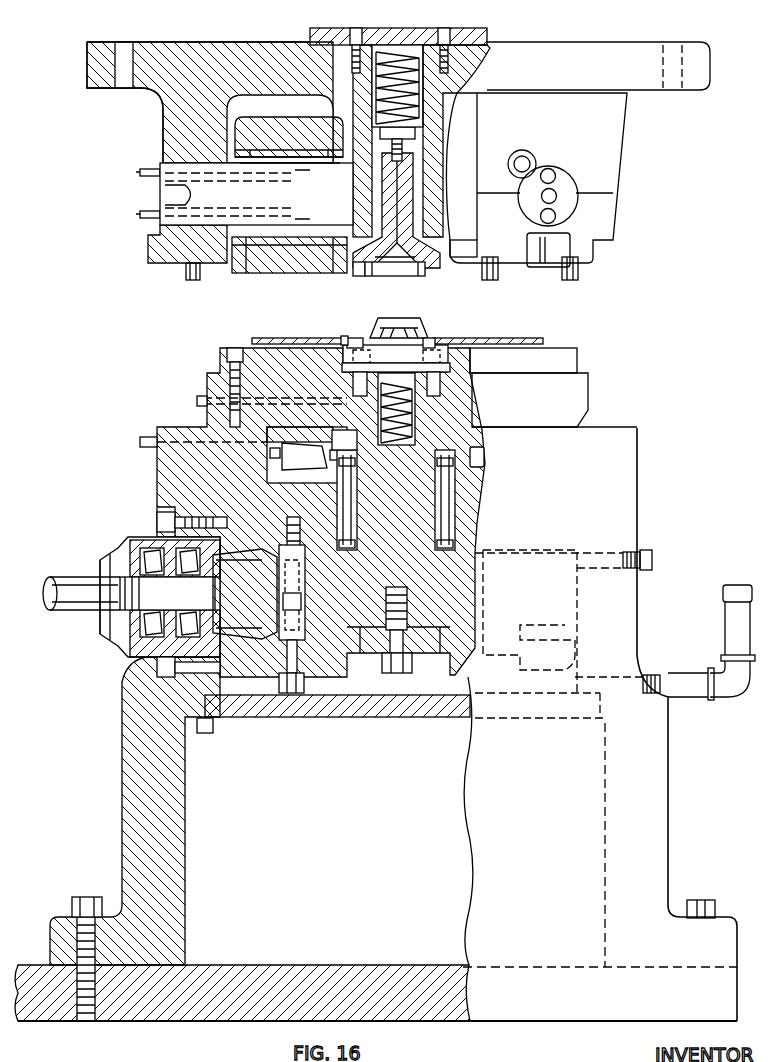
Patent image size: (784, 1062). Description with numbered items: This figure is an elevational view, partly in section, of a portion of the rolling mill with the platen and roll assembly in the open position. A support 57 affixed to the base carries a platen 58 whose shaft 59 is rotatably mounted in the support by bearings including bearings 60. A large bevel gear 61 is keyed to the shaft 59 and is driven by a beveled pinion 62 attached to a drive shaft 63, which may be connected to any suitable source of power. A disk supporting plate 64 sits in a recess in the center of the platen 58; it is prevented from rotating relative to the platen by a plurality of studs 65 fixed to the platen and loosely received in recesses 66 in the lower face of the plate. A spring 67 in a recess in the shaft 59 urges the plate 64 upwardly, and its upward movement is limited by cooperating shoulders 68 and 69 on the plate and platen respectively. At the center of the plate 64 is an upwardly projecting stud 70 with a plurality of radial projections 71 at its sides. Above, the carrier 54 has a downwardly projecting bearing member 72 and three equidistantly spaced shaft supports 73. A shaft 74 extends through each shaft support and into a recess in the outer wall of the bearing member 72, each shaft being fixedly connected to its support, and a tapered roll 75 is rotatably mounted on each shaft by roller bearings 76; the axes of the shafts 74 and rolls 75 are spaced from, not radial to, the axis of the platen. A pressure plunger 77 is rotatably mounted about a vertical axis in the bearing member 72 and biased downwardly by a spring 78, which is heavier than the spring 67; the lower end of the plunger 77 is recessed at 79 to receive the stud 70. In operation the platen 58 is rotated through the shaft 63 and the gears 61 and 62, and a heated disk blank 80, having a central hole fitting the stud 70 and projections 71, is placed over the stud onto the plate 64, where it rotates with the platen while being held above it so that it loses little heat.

The carrier 54 is at (604, 50).
The support 57 is at (655, 784).
The platen 58 is at (582, 394).
The shaft 59 is at (432, 513).
The bearings 60 is at (300, 444).
The large bevel gear 61 is at (254, 661).
The beveled pinion 62 is at (238, 565).
The drive shaft 63 is at (78, 613).
The disk supporting plate 64 is at (438, 348).
The studs 65 is at (440, 383).
The recesses 66 is at (372, 353).
The spring 67 is at (414, 425).
The shoulder 68 is at (373, 352).
The shoulder 69 is at (343, 347).
The stud 70 is at (396, 315).
The radial projections 71 is at (423, 335).
The bearing member 72 is at (426, 168).
The shaft supports 73 is at (176, 130).
The shaft 74 is at (256, 194).
The tapered roll 75 is at (283, 120).
The roller bearings 76 is at (317, 166).
The pressure plunger 77 is at (354, 277).
The spring 78 is at (414, 95).
The recess 79 is at (413, 268).
The disk blank 80 is at (513, 340).